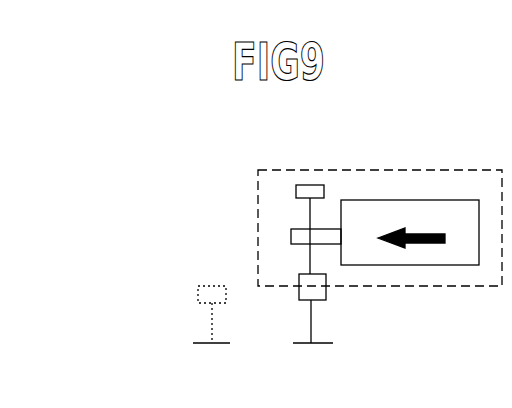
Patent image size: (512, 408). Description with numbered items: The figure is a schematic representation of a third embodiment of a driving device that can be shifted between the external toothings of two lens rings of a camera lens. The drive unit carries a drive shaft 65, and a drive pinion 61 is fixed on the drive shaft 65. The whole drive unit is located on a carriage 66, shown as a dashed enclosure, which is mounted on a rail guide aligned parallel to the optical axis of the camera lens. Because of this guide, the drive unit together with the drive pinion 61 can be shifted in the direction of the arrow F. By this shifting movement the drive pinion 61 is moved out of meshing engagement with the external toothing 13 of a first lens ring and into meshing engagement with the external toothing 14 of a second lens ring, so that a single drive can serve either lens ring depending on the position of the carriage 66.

The external toothing of a first lens ring 13 is at (298, 300).
The external toothing of a second lens ring 14 is at (200, 302).
The drive pinion 61 is at (305, 183).
The drive shaft 65 is at (300, 238).
The carriage 66 is at (456, 180).
The arrow F is at (420, 240).